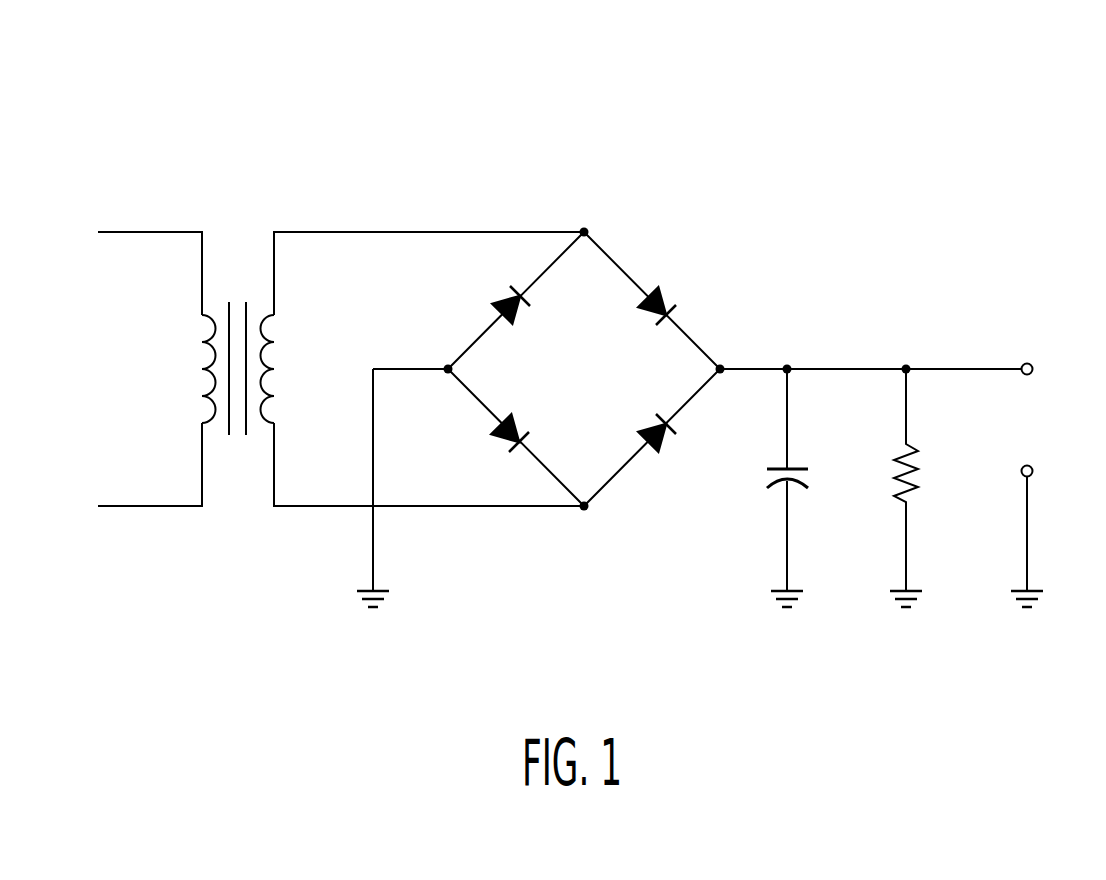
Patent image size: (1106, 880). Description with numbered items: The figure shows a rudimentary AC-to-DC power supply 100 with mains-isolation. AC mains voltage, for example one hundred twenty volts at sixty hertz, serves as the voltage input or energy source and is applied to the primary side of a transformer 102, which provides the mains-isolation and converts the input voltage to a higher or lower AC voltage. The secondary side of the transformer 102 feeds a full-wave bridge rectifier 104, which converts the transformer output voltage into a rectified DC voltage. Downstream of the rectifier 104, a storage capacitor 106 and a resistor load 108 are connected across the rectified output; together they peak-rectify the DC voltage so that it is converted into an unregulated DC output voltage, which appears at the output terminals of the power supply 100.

The AC-to-DC power supply 100 is at (985, 144).
The transformer 102 is at (242, 262).
The full-wave bridge rectifier 104 is at (621, 265).
The storage capacitor 106 is at (771, 483).
The resistor load 108 is at (900, 460).